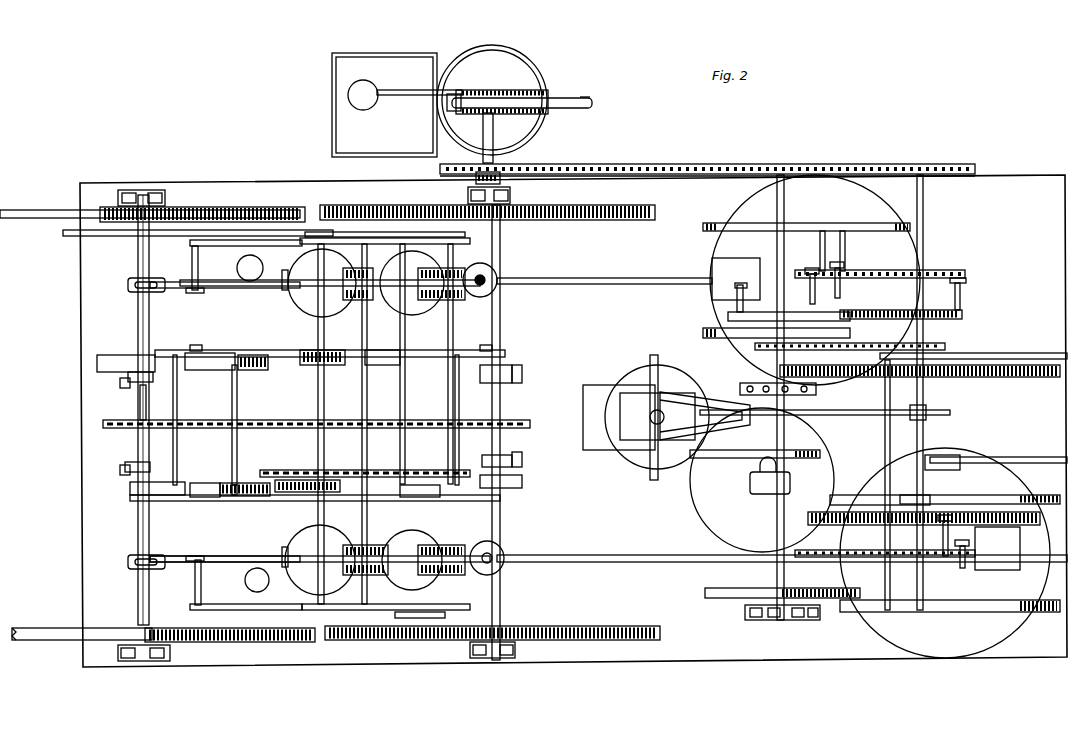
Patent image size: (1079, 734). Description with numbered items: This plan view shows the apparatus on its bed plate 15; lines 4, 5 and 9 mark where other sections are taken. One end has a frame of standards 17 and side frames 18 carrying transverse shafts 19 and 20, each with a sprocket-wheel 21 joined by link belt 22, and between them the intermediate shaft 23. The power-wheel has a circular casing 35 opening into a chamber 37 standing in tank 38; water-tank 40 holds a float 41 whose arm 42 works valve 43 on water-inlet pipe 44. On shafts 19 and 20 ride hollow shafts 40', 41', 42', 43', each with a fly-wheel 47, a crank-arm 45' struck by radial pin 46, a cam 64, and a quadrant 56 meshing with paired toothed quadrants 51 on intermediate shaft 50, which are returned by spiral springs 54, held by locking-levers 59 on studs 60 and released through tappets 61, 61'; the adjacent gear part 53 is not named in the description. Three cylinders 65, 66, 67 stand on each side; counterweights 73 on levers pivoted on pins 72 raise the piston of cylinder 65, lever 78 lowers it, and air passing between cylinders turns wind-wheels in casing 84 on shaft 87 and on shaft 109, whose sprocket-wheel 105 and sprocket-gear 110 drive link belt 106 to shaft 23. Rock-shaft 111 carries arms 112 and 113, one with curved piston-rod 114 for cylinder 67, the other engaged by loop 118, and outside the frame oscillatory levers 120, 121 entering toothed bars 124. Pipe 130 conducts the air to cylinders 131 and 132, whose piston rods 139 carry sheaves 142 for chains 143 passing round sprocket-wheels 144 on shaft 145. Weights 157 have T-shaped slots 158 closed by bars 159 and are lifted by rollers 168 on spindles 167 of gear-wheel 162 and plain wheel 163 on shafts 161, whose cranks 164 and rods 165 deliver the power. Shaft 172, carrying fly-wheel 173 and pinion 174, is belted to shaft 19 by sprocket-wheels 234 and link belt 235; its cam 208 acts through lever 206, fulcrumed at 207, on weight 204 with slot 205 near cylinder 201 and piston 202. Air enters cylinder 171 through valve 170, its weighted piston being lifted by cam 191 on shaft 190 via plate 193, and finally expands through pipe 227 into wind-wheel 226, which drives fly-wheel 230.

The base or bed plate 15 is at (1000, 172).
The standards 17 is at (141, 190).
The side frames 18 is at (315, 222).
The shaft 19 is at (524, 128).
The shaft 20 is at (138, 401).
The sprocket-wheel 21 is at (172, 420).
The link belt 22 is at (255, 420).
The shaft 23 is at (324, 393).
The circular casing 35 is at (575, 97).
The enlarged chamber 37 is at (495, 46).
The tank or vessel 38 is at (528, 62).
The water-tank 40 is at (384, 91).
The float 41 is at (363, 104).
The arm 42 is at (419, 80).
The valve 43 is at (496, 70).
The water-inlet pipe 44 is at (589, 82).
The fly-wheel 47 is at (30, 210).
The hollow shaft 40' is at (125, 410).
The hollow shaft 41' is at (119, 530).
The hollow shaft 42' is at (517, 315).
The hollow shaft 43' is at (517, 517).
The crank-arm 45' is at (317, 423).
The radial pin 46 is at (120, 382).
The shaft 50 is at (232, 448).
The toothed quadrants 51 is at (252, 352).
The gear 53 is at (312, 350).
The spiral springs 54 is at (312, 419).
The quadrant 56 is at (112, 355).
The locking-lever 59 is at (174, 355).
The studs 60 is at (197, 345).
The tappet 61 is at (553, 321).
The tappet 61' is at (129, 504).
The cam 64 is at (128, 284).
The cylinder 65 is at (320, 421).
The cylinder 66 is at (412, 416).
The cylinder 67 is at (497, 275).
The pins 72 is at (274, 425).
The counterweights 73 is at (248, 268).
The lever 78 is at (225, 288).
The air-tight casing 84 is at (359, 421).
The shaft 87 is at (367, 393).
The sprocket-wheel 105 is at (320, 492).
The link belt 106 is at (382, 470).
The shaft 109 is at (445, 445).
The sprocket-gear 110 is at (430, 453).
The rock-shaft 111 is at (405, 244).
The arm 112 is at (441, 412).
The arm 113 is at (320, 422).
The curved piston-rod 114 is at (500, 288).
The loop 118 is at (282, 284).
The oscillatory lever 120 is at (415, 232).
The oscillatory lever 121 is at (422, 618).
The toothed bars 124 is at (255, 225).
The pipe 130 is at (630, 278).
The cylinder 131 is at (945, 553).
The cylinder 132 is at (815, 280).
The rods 139 is at (810, 268).
The sheave 142 is at (830, 265).
The chain 143 is at (790, 285).
The sprocket-wheel 144 is at (945, 270).
The shaft 145 is at (875, 612).
The weight 157 is at (735, 268).
The slot 158 is at (712, 298).
The bar 159 is at (1030, 530).
The shaft 161 is at (845, 255).
The gear-wheel 162 is at (968, 495).
The plain wheel 163 is at (745, 338).
The crank 164 is at (855, 377).
The rod 165 is at (962, 358).
The spindles 167 is at (848, 540).
The antifriction-roller 168 is at (828, 265).
The valve 170 is at (786, 400).
The cylinder 171 is at (700, 508).
The shaft 172 is at (925, 390).
The fly-wheel 173 is at (1017, 388).
The pinion 174 is at (865, 495).
The shaft 190 is at (777, 515).
The cam 191 is at (790, 482).
The bar or plate 193 is at (750, 490).
The cylinder 201 is at (600, 385).
The piston 202 is at (638, 372).
The weight 204 is at (657, 416).
The slot or opening 205 is at (634, 423).
The lever 206 is at (700, 416).
The fulcrum 207 is at (740, 450).
The cam 208 is at (930, 414).
The wind-wheel 226 is at (820, 440).
The pipe 227 is at (718, 455).
The fly-wheel 230 is at (722, 598).
The sprocket-wheels 234 is at (445, 168).
The link belt 235 is at (790, 164).
The section line 4 is at (135, 612).
The section line 5 is at (1075, 432).
The section line 9 is at (332, 103).